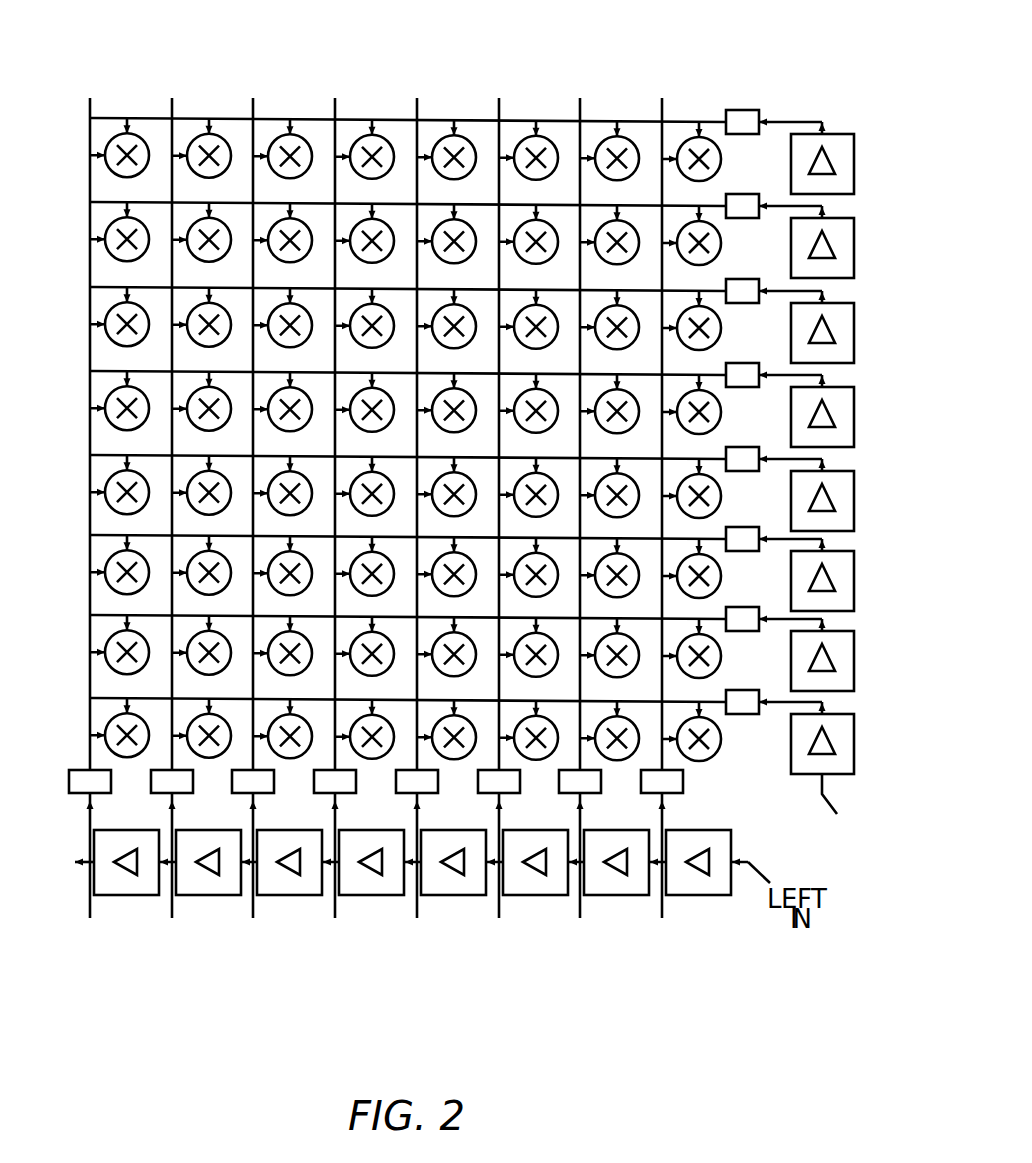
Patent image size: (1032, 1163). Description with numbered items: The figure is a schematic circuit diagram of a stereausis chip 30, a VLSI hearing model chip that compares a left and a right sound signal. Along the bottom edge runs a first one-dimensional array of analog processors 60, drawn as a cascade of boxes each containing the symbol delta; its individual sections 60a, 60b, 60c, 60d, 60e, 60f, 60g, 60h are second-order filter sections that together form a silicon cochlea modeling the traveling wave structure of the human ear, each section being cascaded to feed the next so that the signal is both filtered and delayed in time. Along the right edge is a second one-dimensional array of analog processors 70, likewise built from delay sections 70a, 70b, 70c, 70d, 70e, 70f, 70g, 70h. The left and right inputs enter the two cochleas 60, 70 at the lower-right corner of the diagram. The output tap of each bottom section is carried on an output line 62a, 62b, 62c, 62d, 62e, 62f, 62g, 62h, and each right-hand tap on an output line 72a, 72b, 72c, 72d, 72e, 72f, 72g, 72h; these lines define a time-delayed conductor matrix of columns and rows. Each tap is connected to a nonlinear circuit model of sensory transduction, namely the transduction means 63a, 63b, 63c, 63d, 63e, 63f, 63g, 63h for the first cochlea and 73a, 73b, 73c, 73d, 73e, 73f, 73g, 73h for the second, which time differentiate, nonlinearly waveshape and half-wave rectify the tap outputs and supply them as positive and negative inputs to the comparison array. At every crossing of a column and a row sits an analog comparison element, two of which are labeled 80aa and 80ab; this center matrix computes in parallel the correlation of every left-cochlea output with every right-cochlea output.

The stereausis chip 30 is at (466, 106).
The first one-dimensional array of analog processors 60 is at (738, 908).
The analog processor 60a is at (717, 895).
The analog processor 60b is at (635, 895).
The analog processor 60c is at (554, 895).
The analog processor 60d is at (472, 895).
The analog processor 60e is at (390, 895).
The analog processor 60f is at (308, 895).
The analog processor 60g is at (227, 895).
The analog processor 60h is at (145, 895).
The output line 62a is at (673, 871).
The output line 62b is at (589, 871).
The output line 62c is at (508, 871).
The output line 62d is at (426, 871).
The output line 62e is at (344, 871).
The output line 62f is at (262, 871).
The output line 62g is at (181, 871).
The output line 62h is at (99, 871).
The sensory transduction means 63a is at (672, 794).
The sensory transduction means 63b is at (588, 794).
The sensory transduction means 63c is at (507, 794).
The sensory transduction means 63d is at (425, 794).
The sensory transduction means 63e is at (343, 794).
The sensory transduction means 63f is at (261, 794).
The sensory transduction means 63g is at (180, 794).
The sensory transduction means 63h is at (98, 794).
The second one-dimensional array of analog processors 70 is at (808, 779).
The analog processor 70a is at (855, 740).
The analog processor 70b is at (855, 657).
The analog processor 70c is at (855, 577).
The analog processor 70d is at (855, 497).
The analog processor 70e is at (855, 413).
The analog processor 70f is at (855, 329).
The analog processor 70g is at (855, 244).
The analog processor 70h is at (855, 160).
The output line 72a is at (780, 701).
The output line 72b is at (780, 618).
The output line 72c is at (780, 538).
The output line 72d is at (780, 458).
The output line 72e is at (780, 374).
The output line 72f is at (780, 290).
The output line 72g is at (792, 205).
The output line 72h is at (791, 120).
The sensory transduction means 73a is at (743, 683).
The sensory transduction means 73b is at (743, 600).
The sensory transduction means 73c is at (743, 520).
The sensory transduction means 73d is at (743, 440).
The sensory transduction means 73e is at (743, 356).
The sensory transduction means 73f is at (743, 272).
The sensory transduction means 73g is at (743, 187).
The sensory transduction means 73h is at (741, 109).
The analog comparison element 80aa is at (702, 760).
The analog comparison element 80ab is at (704, 676).